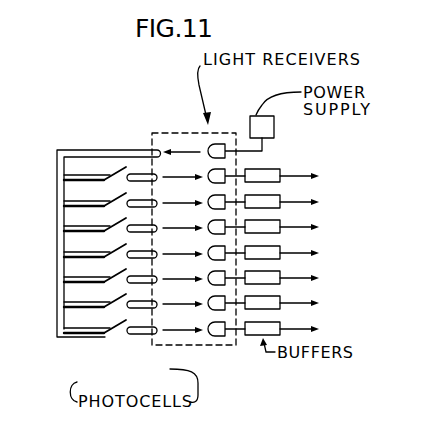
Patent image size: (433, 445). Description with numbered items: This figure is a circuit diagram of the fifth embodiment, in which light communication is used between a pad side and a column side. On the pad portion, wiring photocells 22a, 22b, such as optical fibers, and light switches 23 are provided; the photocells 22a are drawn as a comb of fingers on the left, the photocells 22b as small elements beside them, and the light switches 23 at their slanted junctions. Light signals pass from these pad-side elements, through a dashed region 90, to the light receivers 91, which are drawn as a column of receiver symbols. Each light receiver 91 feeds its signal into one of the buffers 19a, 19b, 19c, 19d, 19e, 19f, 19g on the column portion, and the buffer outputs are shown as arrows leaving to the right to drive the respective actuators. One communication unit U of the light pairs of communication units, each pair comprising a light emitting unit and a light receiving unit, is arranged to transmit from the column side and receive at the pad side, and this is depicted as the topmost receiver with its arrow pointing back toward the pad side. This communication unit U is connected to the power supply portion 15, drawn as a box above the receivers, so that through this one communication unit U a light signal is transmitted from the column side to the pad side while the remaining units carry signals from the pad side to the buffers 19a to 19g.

The power supply portion 15 is at (271, 122).
The buffer 19a is at (281, 169).
The buffer 19b is at (281, 195).
The buffer 19c is at (281, 220).
The buffer 19d is at (281, 246).
The buffer 19e is at (281, 271).
The buffer 19f is at (281, 296).
The buffer 19g is at (281, 322).
The wiring photocell 22a is at (94, 345).
The wiring photocell 22b is at (142, 342).
The light switch 23 is at (122, 347).
The light receiver unit enclosure 90 is at (147, 124).
The light receivers 91 is at (231, 123).
The communication unit U is at (189, 138).